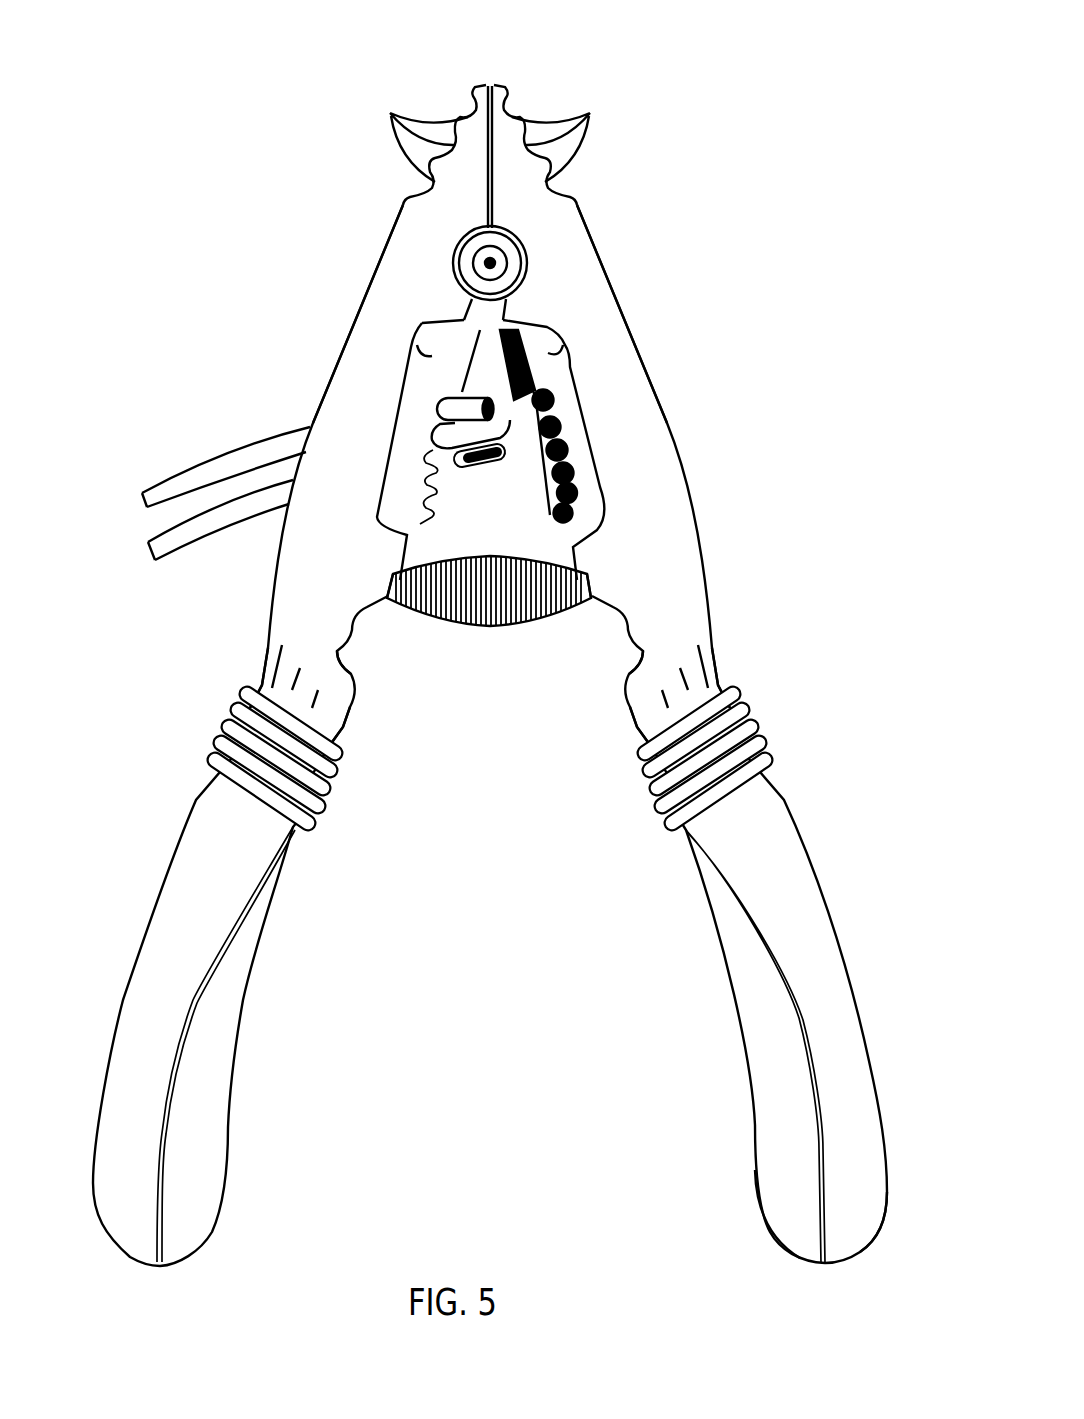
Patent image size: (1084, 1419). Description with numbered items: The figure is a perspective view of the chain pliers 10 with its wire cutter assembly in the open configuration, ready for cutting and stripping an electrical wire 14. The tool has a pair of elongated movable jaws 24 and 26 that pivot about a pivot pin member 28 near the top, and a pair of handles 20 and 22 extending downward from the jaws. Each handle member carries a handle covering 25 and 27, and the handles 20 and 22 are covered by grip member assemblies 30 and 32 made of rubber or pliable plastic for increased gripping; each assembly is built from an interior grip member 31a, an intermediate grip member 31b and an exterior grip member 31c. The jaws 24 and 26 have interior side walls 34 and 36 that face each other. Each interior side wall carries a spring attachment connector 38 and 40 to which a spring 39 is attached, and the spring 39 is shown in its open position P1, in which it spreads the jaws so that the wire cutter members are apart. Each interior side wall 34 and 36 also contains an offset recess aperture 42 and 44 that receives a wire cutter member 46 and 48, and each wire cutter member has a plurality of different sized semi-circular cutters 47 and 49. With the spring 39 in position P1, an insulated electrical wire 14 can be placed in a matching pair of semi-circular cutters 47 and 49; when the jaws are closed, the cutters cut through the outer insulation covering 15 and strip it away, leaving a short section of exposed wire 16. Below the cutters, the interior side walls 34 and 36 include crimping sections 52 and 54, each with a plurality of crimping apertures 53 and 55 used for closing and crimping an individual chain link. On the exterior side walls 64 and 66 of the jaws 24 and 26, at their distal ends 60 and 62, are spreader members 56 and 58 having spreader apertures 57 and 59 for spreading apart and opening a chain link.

The chain pliers 10 is at (232, 355).
The electrical wire 14 is at (178, 546).
The outer insulation covering 15 is at (475, 407).
The exposed wire 16 is at (495, 445).
The handle 20 is at (262, 680).
The handle 22 is at (685, 693).
The movable jaw 24 is at (347, 417).
The handle covering 25 is at (240, 690).
The movable jaw 26 is at (625, 447).
The handle covering 27 is at (740, 722).
The pivot pin member 28 is at (515, 258).
The grip member assembly 30 is at (169, 928).
The interior grip member 31a is at (790, 1205).
The intermediate grip member 31b is at (821, 1210).
The exterior grip member 31c is at (852, 1205).
The grip member assembly 32 is at (805, 890).
The interior side wall 34 is at (348, 725).
The interior side wall 36 is at (630, 725).
The spring attachment connector 38 is at (407, 577).
The spring 39 is at (473, 558).
The spring attachment connector 40 is at (575, 578).
The offset recess aperture 42 is at (430, 353).
The offset recess aperture 44 is at (550, 352).
The wire cutter member 46 is at (433, 404).
The semi-circular cutters 47 is at (433, 477).
The wire cutter member 48 is at (558, 400).
The semi-circular cutters 49 is at (547, 453).
The crimping section 52 is at (330, 683).
The crimping apertures 53 is at (337, 650).
The crimping section 54 is at (652, 683).
The crimping apertures 55 is at (643, 650).
The spreader member 56 is at (428, 215).
The spreader apertures 57 is at (420, 134).
The spreader member 58 is at (555, 208).
The spreader apertures 59 is at (558, 131).
The distal end 60 is at (480, 84).
The distal end 62 is at (500, 84).
The exterior side wall 64 is at (345, 335).
The exterior side wall 66 is at (670, 413).
The open position P1 is at (490, 605).